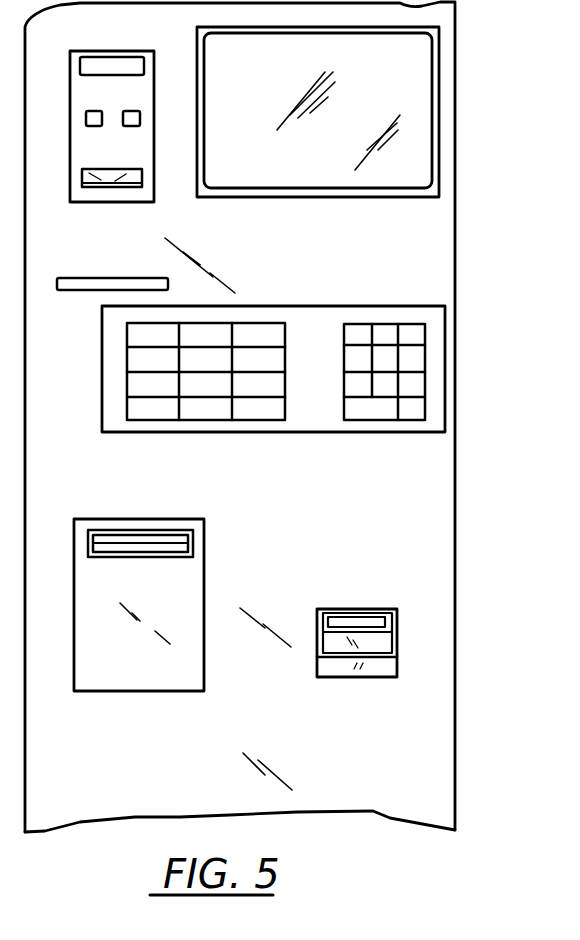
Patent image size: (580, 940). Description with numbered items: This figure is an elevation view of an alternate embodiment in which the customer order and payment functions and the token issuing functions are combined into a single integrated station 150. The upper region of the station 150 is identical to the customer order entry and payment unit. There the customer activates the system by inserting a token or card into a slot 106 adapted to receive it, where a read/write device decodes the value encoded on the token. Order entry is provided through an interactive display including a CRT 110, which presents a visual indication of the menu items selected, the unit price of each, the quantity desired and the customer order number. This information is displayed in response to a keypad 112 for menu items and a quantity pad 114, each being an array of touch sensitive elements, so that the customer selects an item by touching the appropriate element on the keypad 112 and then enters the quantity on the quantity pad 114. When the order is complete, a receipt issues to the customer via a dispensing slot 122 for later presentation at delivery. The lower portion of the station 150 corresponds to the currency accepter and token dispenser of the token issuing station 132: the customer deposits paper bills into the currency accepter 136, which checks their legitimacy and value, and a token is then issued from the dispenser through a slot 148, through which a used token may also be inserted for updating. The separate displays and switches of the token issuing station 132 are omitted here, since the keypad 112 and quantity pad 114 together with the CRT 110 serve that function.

The integrated station 150 is at (462, 147).
The CRT 110 is at (423, 88).
The slot 106 is at (112, 183).
The dispensing slot 122 is at (88, 255).
The quantity pad 114 is at (427, 353).
The keypad 112 is at (215, 412).
The currency accepter 136 is at (160, 641).
The slot 148 is at (363, 618).
The token issuing station 132 is at (579, 745).